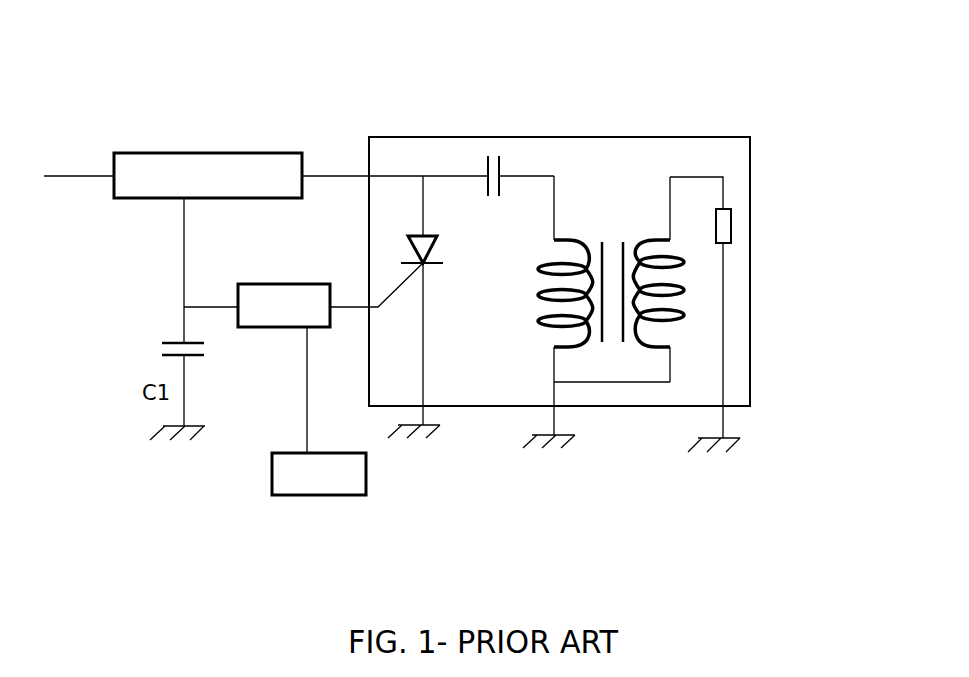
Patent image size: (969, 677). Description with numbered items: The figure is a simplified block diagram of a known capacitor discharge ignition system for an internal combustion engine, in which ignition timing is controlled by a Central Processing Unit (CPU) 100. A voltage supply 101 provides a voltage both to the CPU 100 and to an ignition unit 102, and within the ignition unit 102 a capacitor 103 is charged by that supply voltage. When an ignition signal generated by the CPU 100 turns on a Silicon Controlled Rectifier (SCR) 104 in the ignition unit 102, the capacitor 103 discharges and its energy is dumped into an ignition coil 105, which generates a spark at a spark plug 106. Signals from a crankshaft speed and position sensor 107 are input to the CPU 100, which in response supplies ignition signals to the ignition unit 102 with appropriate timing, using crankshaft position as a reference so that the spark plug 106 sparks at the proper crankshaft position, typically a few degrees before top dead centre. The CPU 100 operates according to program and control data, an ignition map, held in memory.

The Central Processing Unit 100 is at (295, 329).
The voltage supply 101 is at (137, 196).
The ignition unit 102 is at (692, 136).
The capacitor 103 is at (487, 180).
The Silicon Controlled Rectifier 104 is at (435, 242).
The ignition coil 105 is at (524, 350).
The spark plug 106 is at (731, 223).
The crankshaft speed and position sensor 107 is at (303, 493).